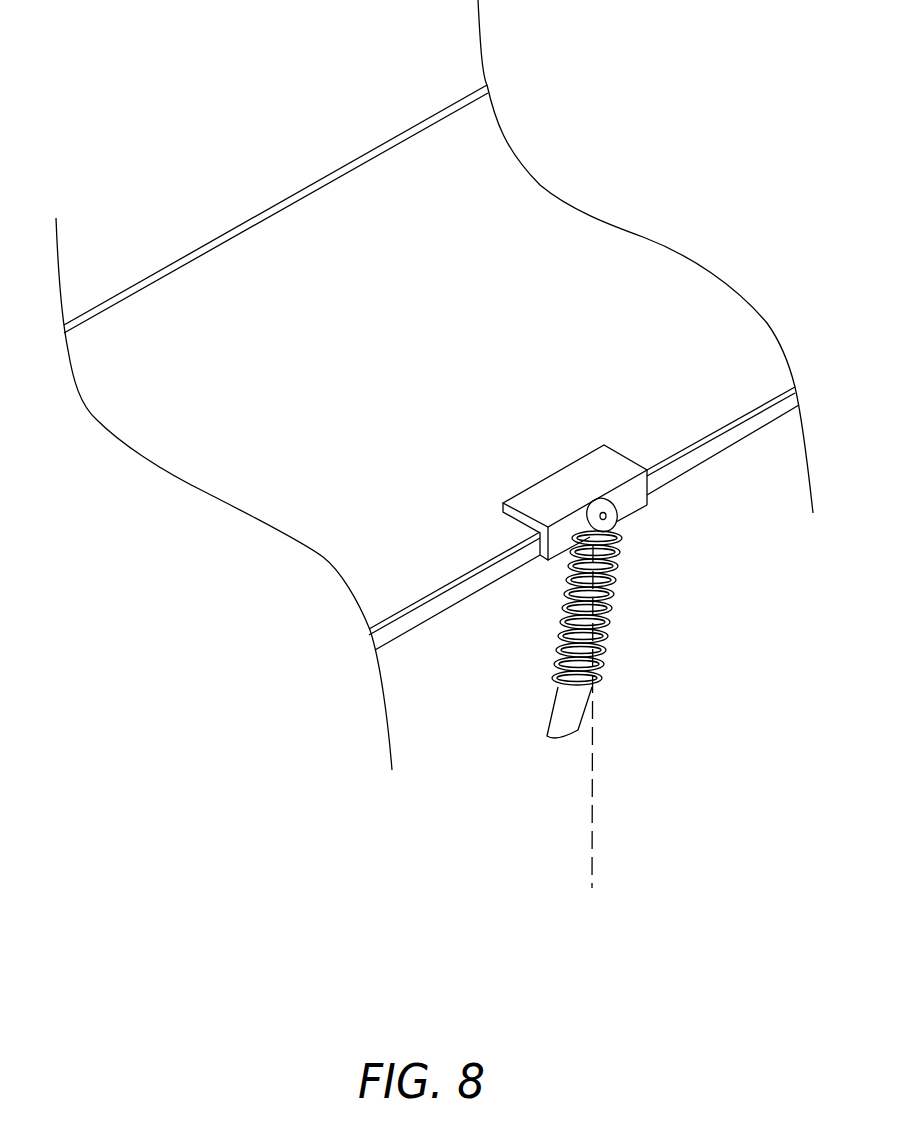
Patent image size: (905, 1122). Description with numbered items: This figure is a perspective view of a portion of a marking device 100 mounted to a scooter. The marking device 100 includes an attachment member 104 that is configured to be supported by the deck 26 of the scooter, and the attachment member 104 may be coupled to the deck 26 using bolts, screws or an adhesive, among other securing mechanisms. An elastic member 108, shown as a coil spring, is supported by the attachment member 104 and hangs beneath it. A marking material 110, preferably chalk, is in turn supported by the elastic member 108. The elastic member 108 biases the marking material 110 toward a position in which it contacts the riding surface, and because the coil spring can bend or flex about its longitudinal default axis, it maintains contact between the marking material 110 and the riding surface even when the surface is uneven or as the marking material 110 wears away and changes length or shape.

The deck 26 is at (285, 252).
The marking device 100 is at (583, 624).
The attachment member 104 is at (570, 480).
The elastic member 108 is at (618, 578).
The marking material 110 is at (592, 707).